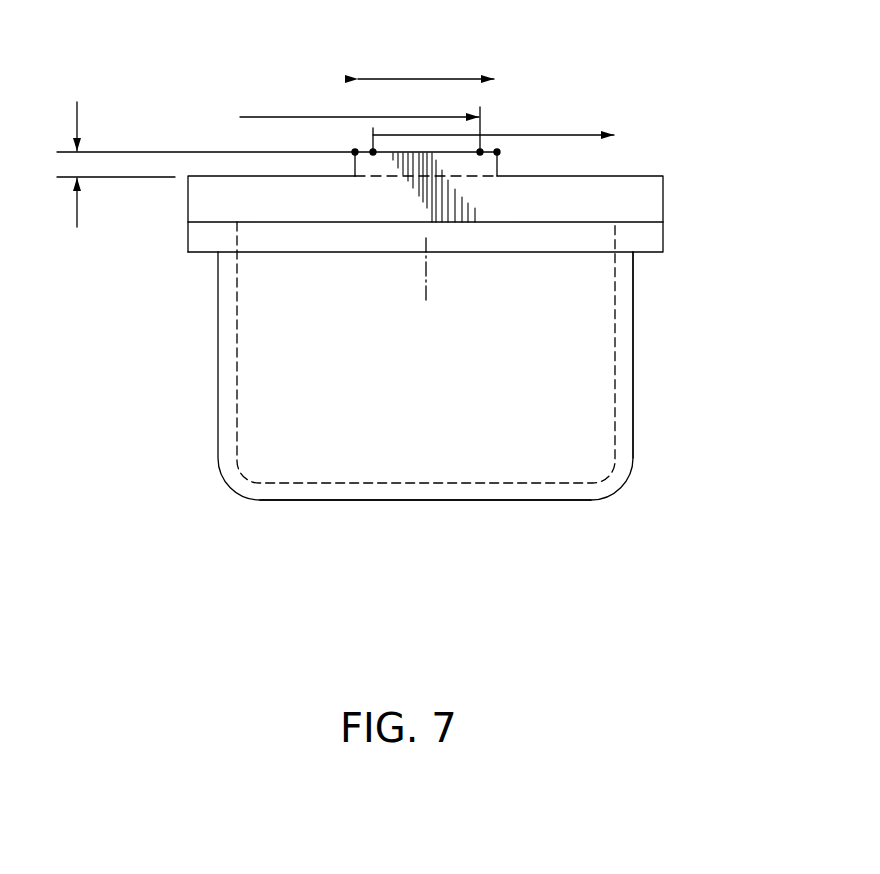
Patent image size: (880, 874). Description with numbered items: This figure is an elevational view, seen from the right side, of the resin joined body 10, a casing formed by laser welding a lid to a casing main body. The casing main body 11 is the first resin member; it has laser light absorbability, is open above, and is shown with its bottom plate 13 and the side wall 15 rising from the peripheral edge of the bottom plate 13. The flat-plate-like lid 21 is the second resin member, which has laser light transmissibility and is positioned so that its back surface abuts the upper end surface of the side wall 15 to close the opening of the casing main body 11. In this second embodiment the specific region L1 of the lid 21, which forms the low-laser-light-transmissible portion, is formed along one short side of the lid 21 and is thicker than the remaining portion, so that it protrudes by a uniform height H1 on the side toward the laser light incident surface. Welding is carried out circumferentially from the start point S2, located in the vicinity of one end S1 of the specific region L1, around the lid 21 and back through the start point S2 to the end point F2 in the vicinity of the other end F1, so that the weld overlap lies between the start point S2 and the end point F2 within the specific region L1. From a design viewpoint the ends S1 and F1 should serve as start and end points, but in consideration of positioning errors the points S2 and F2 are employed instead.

The resin joined body 10 is at (200, 132).
The casing main body 11 is at (217, 363).
The bottom plate 13 is at (383, 500).
The side wall 15 is at (633, 388).
The lid 21 is at (666, 200).
The end of the specific region S1 is at (355, 152).
The start point S2 is at (373, 152).
The other end of the specific region F1 is at (497, 152).
The end point F2 is at (480, 152).
The specific region L1 is at (426, 64).
The uniform height H1 is at (103, 169).